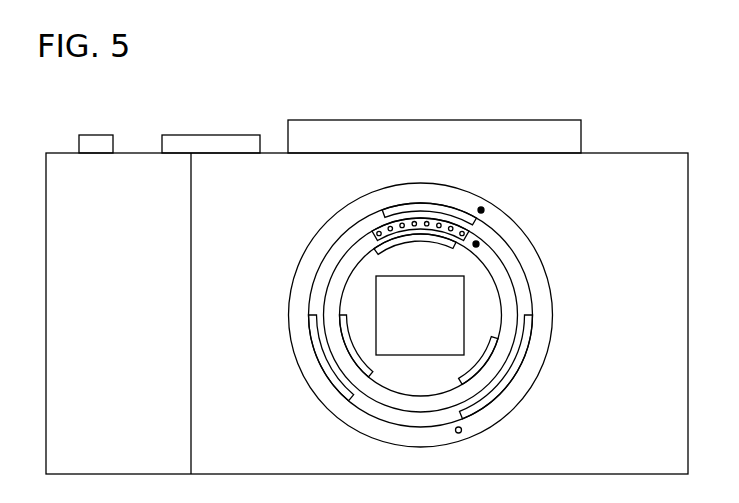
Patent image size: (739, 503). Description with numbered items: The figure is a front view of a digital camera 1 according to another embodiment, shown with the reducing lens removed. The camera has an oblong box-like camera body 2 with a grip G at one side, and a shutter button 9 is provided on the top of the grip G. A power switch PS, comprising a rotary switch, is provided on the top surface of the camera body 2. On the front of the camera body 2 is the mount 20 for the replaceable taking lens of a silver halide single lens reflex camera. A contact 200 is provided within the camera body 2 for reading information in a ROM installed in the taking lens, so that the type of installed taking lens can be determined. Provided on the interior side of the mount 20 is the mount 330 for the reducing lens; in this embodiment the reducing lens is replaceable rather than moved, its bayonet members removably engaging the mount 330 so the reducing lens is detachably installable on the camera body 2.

The digital camera 1 is at (627, 149).
The camera body 2 is at (533, 153).
The shutter button 9 is at (95, 135).
The power switch PS is at (209, 135).
The grip G is at (90, 202).
The mount 20 is at (342, 215).
The contact 200 is at (473, 233).
The mount for the reducing lens 330 is at (385, 293).